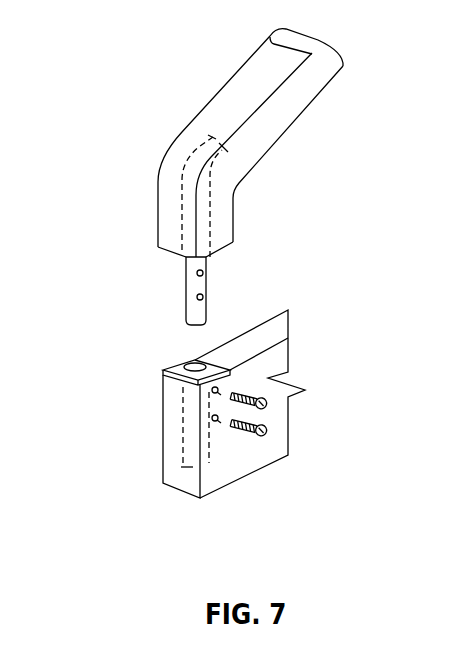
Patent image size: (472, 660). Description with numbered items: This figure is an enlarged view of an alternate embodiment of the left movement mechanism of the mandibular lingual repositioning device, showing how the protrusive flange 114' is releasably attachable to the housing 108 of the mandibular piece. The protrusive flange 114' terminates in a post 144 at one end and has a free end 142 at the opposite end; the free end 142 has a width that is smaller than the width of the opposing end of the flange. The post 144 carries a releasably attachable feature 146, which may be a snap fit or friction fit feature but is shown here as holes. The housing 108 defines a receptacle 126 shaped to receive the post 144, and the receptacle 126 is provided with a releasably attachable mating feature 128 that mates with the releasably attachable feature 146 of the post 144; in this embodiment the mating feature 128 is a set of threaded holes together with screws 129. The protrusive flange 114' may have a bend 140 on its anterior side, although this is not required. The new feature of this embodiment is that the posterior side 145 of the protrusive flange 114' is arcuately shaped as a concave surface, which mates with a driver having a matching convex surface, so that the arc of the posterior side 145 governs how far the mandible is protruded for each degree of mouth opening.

The housing 108 is at (230, 472).
The protrusive flange 114' is at (132, 196).
The receptacle 126 is at (195, 366).
The releasably attachable mating feature 128 is at (183, 425).
The screws 129 is at (266, 432).
The bend 140 is at (172, 165).
The free end 142 is at (313, 44).
The post 144 is at (187, 300).
The posterior side 145 is at (250, 201).
The releasably attachable feature 146 is at (204, 274).